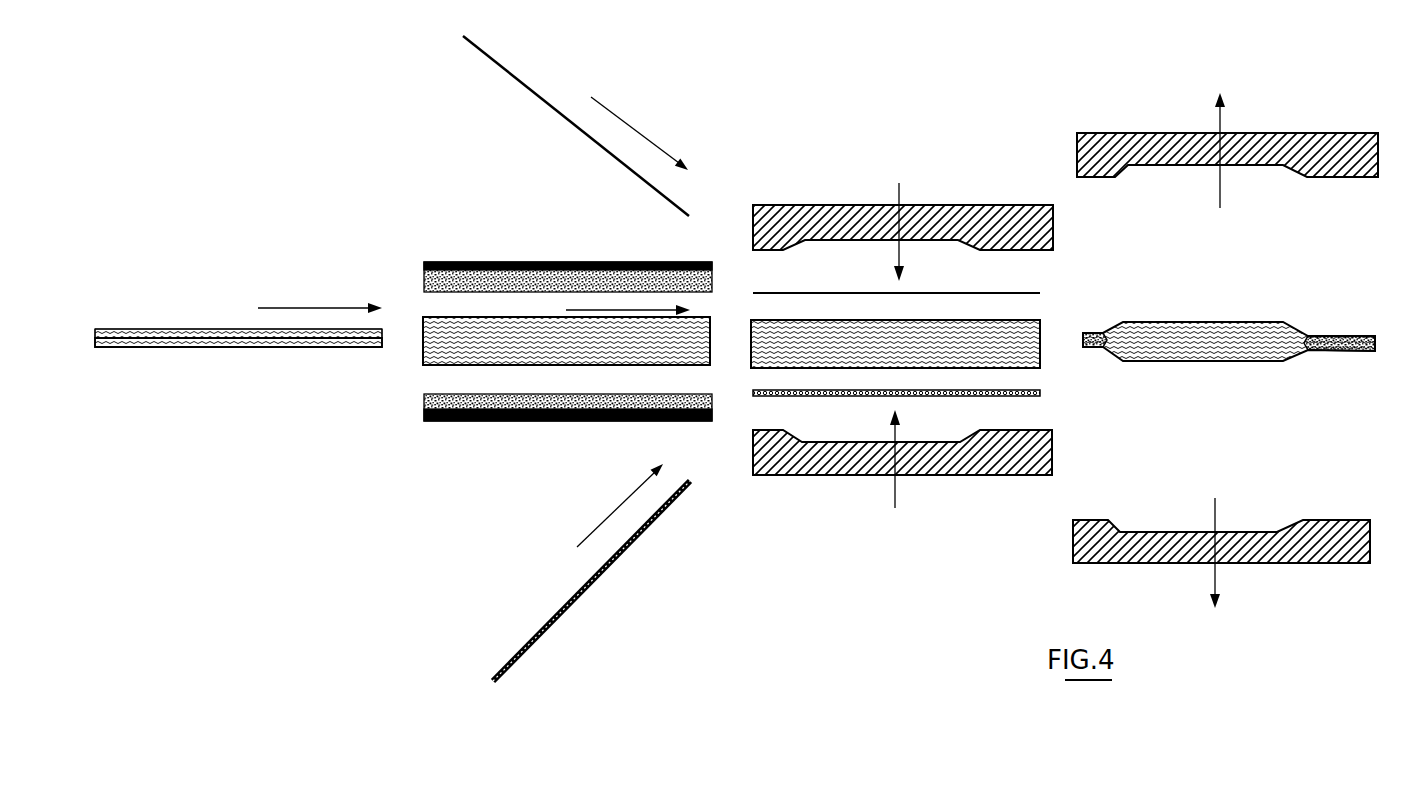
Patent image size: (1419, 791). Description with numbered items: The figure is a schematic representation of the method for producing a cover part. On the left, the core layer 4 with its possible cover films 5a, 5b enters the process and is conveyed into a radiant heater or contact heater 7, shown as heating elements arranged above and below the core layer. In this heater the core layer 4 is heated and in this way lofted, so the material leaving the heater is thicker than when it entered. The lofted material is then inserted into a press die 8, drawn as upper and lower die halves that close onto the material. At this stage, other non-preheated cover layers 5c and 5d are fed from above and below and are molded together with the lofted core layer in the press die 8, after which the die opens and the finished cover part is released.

The core layer 4 is at (160, 329).
The cover film 5a is at (118, 329).
The cover film 5b is at (378, 348).
The cover layer 5c is at (525, 82).
The cover layer 5d is at (643, 531).
The radiant heater or contact heater 7 is at (425, 272).
The press die 8 is at (938, 210).